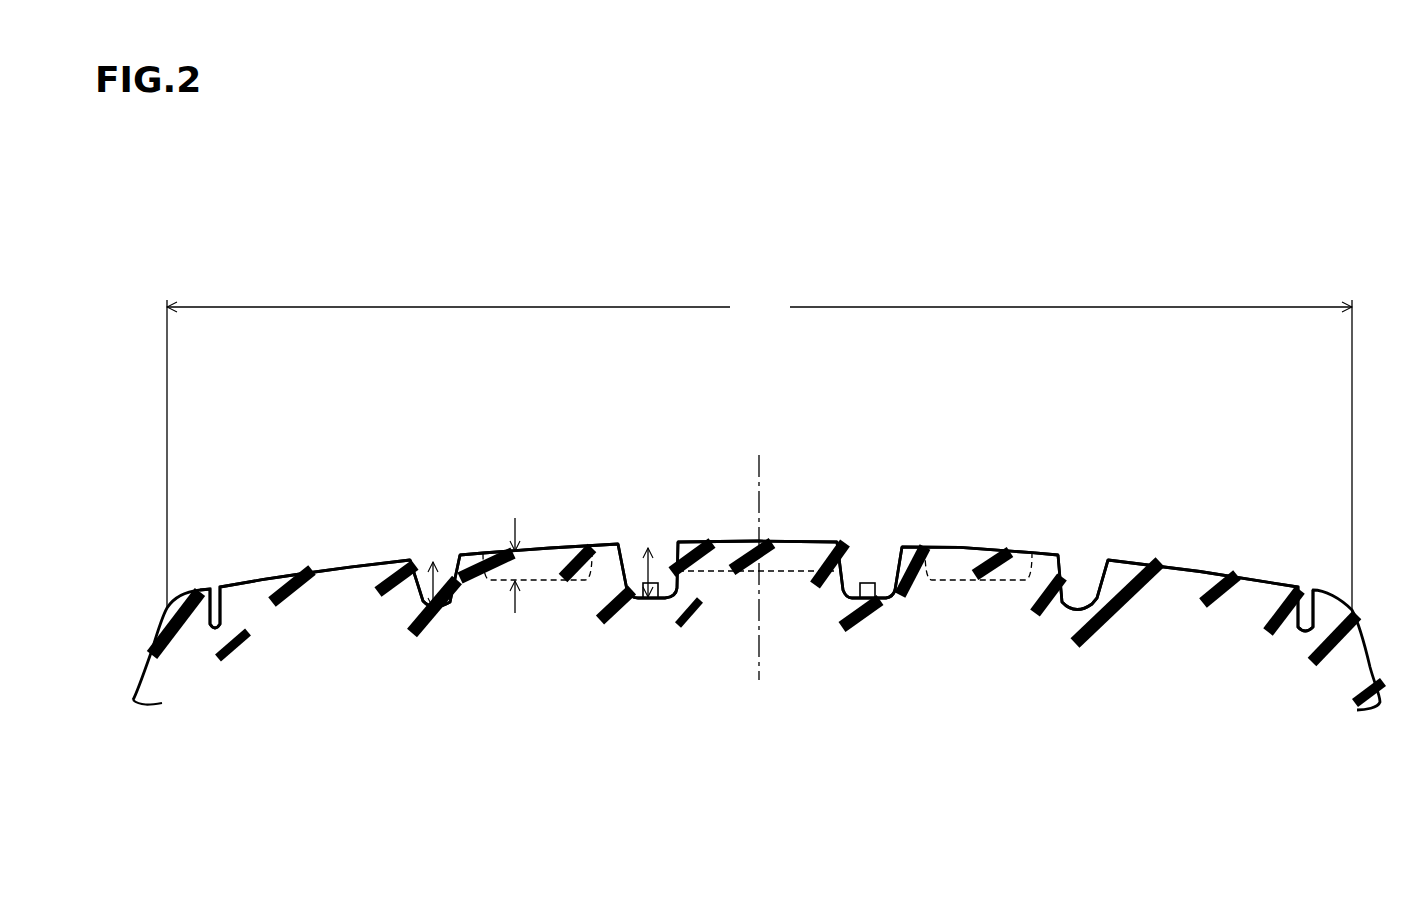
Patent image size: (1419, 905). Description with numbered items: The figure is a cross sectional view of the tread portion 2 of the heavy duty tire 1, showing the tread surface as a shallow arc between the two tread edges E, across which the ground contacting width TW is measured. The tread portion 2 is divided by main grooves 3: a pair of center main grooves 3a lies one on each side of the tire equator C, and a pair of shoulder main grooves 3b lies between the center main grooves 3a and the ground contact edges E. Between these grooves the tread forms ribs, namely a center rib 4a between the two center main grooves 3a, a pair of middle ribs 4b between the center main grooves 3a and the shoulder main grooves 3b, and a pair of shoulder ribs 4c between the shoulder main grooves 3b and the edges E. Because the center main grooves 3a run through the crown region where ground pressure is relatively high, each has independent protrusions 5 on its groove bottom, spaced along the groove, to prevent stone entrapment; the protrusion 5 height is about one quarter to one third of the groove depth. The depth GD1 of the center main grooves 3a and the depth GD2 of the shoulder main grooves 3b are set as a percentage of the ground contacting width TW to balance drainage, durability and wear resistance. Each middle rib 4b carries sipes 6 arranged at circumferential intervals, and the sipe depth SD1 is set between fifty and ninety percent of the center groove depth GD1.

The heavy duty tire 1 is at (1216, 466).
The tread portion 2 is at (296, 518).
The main grooves 3 is at (763, 525).
The center main grooves 3a is at (663, 560).
The shoulder main grooves 3b is at (442, 553).
The center rib 4a is at (802, 538).
The middle ribs 4b is at (533, 548).
The shoulder ribs 4c is at (258, 577).
The protrusions 5 is at (872, 588).
The sipes 6 is at (548, 573).
The tire equator C is at (759, 552).
The tread edges E is at (167, 608).
The ground contacting width TW is at (759, 452).
The depth of center main groove GD1 is at (627, 573).
The depth of shoulder main groove GD2 is at (420, 600).
The depth of sipe SD1 is at (513, 580).